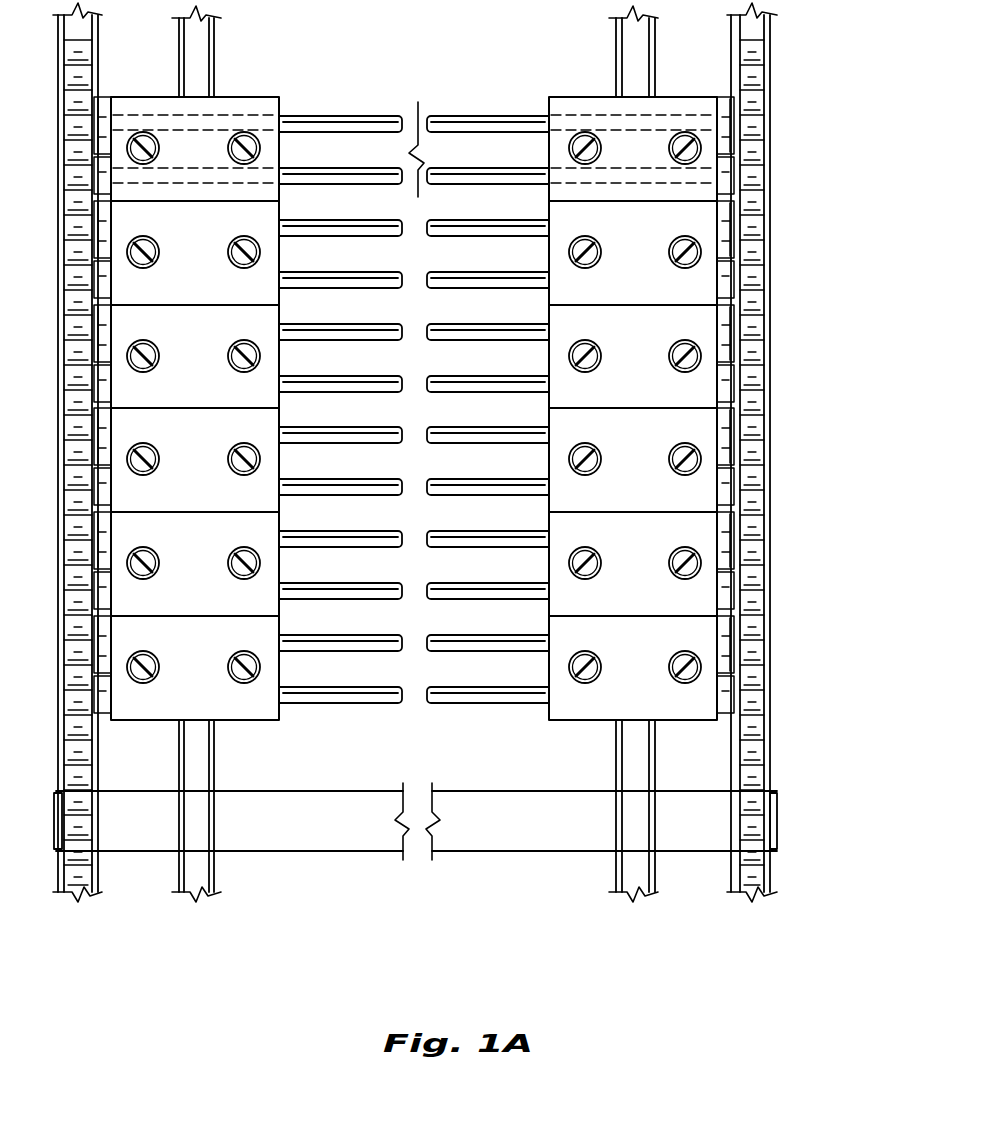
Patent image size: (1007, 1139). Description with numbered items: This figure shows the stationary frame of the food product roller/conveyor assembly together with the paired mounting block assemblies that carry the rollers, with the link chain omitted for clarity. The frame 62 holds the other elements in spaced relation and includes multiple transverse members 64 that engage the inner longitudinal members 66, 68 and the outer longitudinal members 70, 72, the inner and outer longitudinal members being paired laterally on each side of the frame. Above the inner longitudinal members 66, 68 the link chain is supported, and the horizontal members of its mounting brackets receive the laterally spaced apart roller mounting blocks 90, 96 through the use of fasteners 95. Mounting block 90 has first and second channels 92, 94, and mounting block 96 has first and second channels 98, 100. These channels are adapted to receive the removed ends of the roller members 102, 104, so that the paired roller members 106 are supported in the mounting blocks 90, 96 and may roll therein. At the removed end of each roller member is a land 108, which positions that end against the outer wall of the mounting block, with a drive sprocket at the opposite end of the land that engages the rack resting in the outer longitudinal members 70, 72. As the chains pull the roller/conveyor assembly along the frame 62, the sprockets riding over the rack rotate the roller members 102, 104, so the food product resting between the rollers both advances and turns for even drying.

The frame 62 is at (360, 875).
The transverse members 64 is at (365, 835).
The inner longitudinal member 66 is at (617, 866).
The inner longitudinal member 68 is at (215, 866).
The outer longitudinal member 70 is at (733, 868).
The outer longitudinal member 72 is at (103, 866).
The roller mounting block 90 is at (597, 100).
The first channel 92 is at (600, 185).
The second channel 94 is at (653, 114).
The fasteners 95 is at (702, 147).
The roller mounting block 96 is at (226, 100).
The first channel 98 is at (168, 107).
The second channel 100 is at (217, 185).
The roller member 102 is at (450, 186).
The roller member 104 is at (445, 115).
The paired roller members 106 is at (395, 149).
The land 108 is at (102, 95).